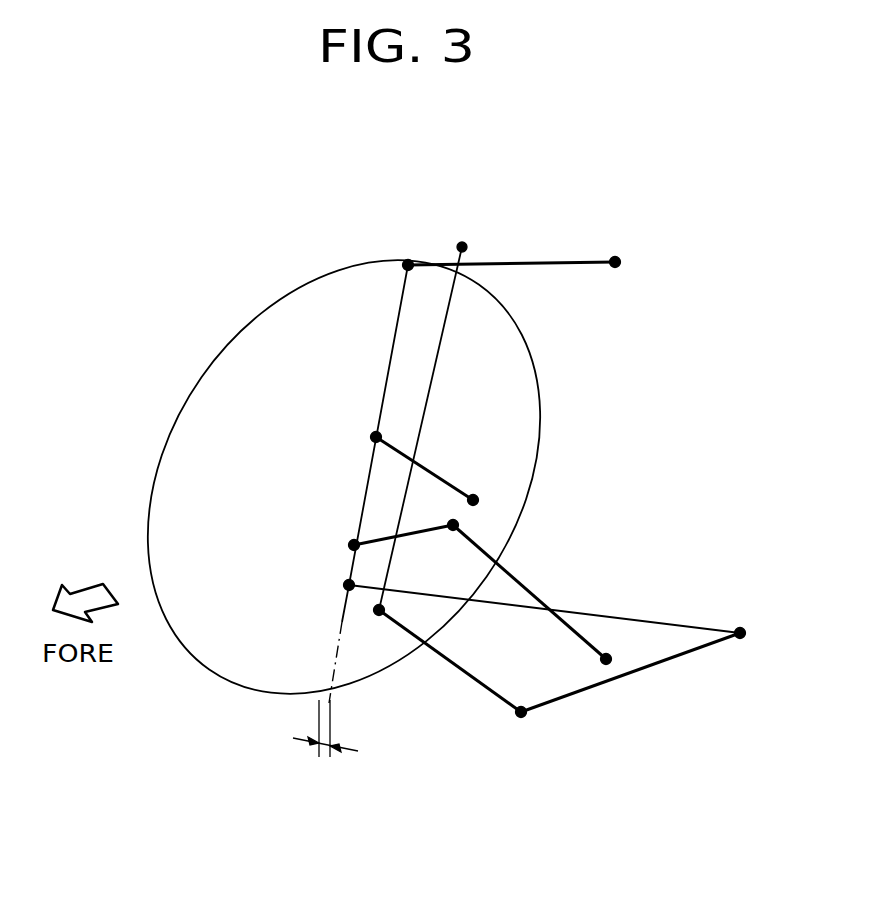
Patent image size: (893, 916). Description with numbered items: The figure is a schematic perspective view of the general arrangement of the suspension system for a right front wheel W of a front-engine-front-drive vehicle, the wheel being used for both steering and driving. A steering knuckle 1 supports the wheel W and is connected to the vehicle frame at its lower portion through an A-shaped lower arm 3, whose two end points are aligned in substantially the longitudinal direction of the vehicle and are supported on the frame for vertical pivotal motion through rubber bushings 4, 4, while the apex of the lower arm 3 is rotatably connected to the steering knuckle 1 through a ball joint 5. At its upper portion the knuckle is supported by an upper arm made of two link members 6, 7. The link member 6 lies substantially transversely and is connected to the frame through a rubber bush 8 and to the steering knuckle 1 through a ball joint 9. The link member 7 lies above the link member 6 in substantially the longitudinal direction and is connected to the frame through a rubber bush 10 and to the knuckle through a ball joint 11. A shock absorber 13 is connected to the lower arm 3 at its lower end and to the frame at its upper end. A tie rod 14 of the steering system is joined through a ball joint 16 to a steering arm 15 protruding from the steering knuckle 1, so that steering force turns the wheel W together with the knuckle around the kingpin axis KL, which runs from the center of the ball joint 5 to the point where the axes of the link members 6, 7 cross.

The steering knuckle 1 is at (390, 362).
The lower arm 3 is at (454, 678).
The rubber bushings 4 is at (520, 717).
The ball joint 5 is at (347, 585).
The link member 6 is at (430, 478).
The link member 7 is at (535, 262).
The rubber bush 8 is at (478, 500).
The ball joint 9 is at (372, 437).
The rubber bush 10 is at (616, 262).
The ball joint 11 is at (408, 262).
The shock absorber 13 is at (435, 383).
The tie rod 14 is at (523, 582).
The steering arm 15 is at (352, 540).
The ball joint 16 is at (458, 525).
The front wheel W is at (197, 393).